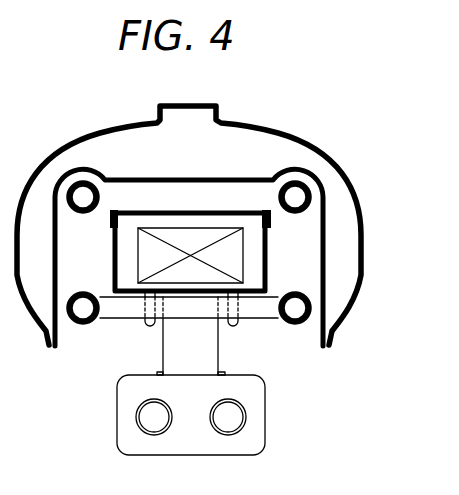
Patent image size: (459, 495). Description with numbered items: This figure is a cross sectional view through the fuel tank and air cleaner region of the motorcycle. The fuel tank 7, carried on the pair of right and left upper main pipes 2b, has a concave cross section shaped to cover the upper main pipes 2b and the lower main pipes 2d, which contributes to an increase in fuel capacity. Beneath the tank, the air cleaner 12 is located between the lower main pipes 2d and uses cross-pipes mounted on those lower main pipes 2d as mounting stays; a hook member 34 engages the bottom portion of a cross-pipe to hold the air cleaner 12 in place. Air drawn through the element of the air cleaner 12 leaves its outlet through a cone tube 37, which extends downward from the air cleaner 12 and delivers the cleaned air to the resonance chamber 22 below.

The fuel tank 7 is at (213, 151).
The upper main pipes 2b is at (305, 187).
The lower main pipes 2d is at (302, 323).
The air cleaner 12 is at (268, 257).
The hook member 34 is at (146, 326).
The cone tube 37 is at (218, 347).
The resonance chamber 22 is at (265, 420).